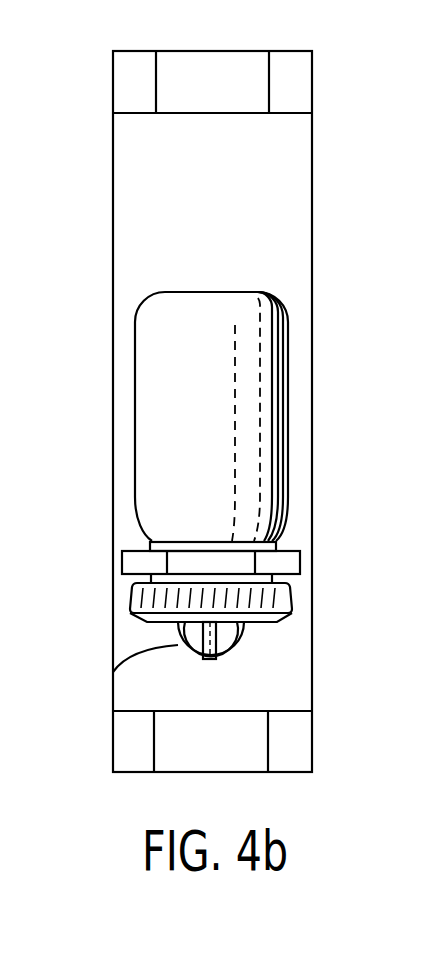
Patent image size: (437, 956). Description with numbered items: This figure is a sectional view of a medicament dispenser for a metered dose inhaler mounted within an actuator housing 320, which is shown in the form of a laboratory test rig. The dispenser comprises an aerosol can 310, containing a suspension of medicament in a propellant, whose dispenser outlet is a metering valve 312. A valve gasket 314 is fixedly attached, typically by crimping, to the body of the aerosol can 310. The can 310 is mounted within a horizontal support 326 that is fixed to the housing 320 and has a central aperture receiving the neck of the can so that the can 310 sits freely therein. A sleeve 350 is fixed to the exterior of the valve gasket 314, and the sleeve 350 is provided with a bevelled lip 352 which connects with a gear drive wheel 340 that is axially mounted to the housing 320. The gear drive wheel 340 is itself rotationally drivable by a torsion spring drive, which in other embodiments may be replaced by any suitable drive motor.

The aerosol can 310 is at (173, 432).
The metering valve 312 is at (208, 642).
The valve gasket 314 is at (276, 543).
The actuator housing 320 is at (167, 208).
The horizontal support 326 is at (285, 565).
The gear drive wheel 340 is at (113, 672).
The sleeve 350 is at (283, 595).
The bevelled lip 352 is at (292, 613).